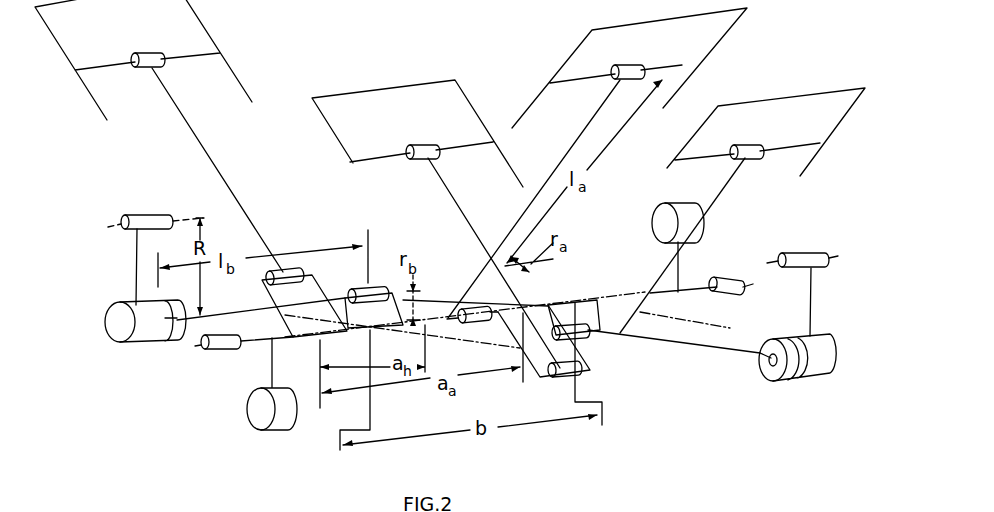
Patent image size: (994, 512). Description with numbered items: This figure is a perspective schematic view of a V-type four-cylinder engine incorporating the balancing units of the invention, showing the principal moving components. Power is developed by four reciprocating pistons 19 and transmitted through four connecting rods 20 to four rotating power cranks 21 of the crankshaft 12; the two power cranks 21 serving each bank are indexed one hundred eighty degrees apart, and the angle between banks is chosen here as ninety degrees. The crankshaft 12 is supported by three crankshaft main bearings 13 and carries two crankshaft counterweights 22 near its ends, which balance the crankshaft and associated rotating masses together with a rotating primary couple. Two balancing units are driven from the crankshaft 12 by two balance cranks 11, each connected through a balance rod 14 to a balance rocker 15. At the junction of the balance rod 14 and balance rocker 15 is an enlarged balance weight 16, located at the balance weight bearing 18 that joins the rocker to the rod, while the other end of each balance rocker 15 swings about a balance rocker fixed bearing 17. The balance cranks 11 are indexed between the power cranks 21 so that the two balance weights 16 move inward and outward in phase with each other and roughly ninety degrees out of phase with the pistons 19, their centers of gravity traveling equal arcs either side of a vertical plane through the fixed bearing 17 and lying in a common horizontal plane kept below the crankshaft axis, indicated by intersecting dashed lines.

The balance crank 11 is at (388, 288).
The crankshaft 12 is at (294, 338).
The crankshaft main bearing 13 is at (223, 352).
The balance rod 14 is at (231, 312).
The balance rocker 15 is at (135, 260).
The balance weight 16 is at (163, 340).
The balance rocker fixed bearing 17 is at (141, 214).
The balance weight bearing 18 is at (188, 314).
The piston 19 is at (232, 66).
The connecting rod 20 is at (222, 170).
The power crank 21 is at (308, 276).
The crankshaft counterweight 22 is at (247, 422).